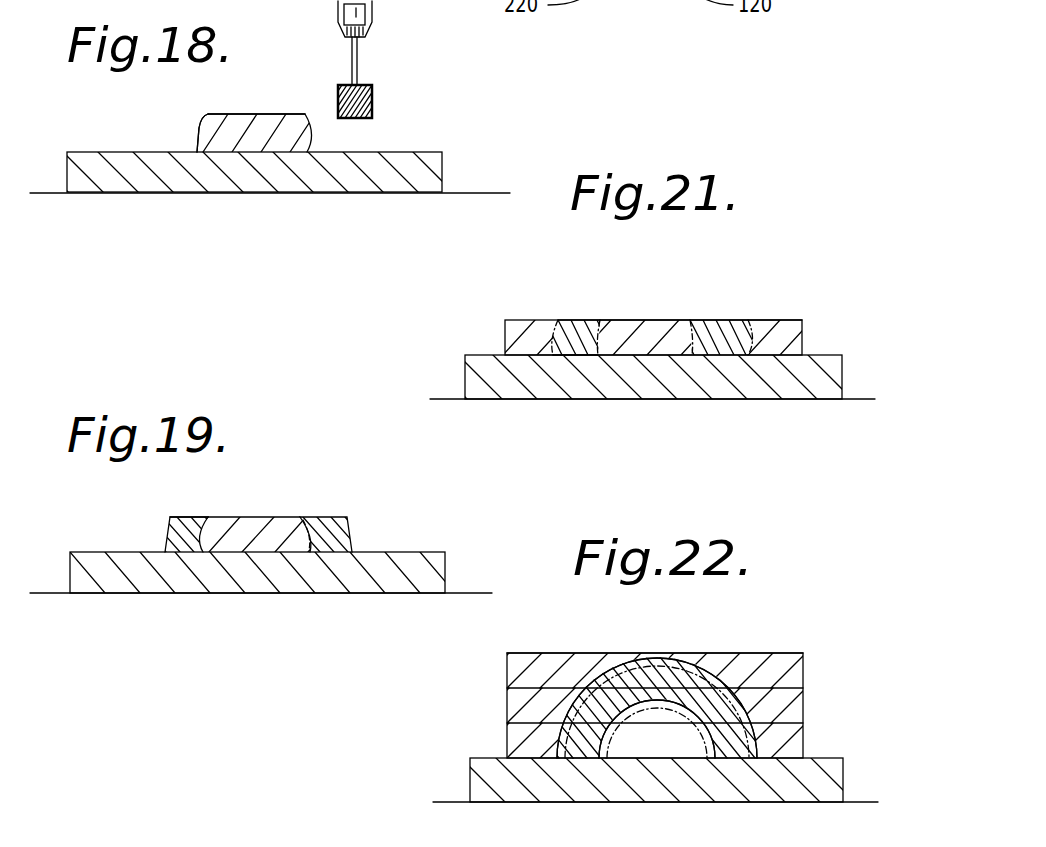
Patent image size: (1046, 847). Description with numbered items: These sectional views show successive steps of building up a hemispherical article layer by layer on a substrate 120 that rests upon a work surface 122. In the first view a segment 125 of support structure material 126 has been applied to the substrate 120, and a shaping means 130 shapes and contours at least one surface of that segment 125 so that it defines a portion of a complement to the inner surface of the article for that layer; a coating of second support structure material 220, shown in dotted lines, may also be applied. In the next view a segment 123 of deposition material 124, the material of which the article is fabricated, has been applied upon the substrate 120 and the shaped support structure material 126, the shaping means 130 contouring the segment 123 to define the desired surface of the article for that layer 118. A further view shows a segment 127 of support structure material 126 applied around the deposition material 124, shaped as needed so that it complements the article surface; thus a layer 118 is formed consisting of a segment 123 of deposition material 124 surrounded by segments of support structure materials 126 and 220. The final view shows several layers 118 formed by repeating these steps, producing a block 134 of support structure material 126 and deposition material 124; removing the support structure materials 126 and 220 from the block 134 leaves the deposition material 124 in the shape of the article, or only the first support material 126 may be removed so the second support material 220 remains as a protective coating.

In FIG. 21, the layer 118 is at (496, 330).
In FIG. 18, the substrate 120 is at (203, 172).
In FIG. 19, the substrate 120 is at (245, 573).
In FIG. 21, the substrate 120 is at (642, 377).
In FIG. 22, the substrate 120 is at (498, 777).
In FIG. 18, the work surface 122 is at (482, 192).
In FIG. 19, the work surface 122 is at (477, 593).
In FIG. 21, the work surface 122 is at (447, 397).
In FIG. 22, the work surface 122 is at (448, 798).
In FIG. 19, the segment of deposition material 123 is at (348, 533).
In FIG. 21, the segment of deposition material 123 is at (718, 328).
In FIG. 19, the deposition material 124 is at (173, 537).
In FIG. 21, the deposition material 124 is at (580, 325).
In FIG. 22, the deposition material 124 is at (641, 665).
In FIG. 18, the segment of support structure material 125 is at (298, 142).
In FIG. 19, the segment of support structure material 125 is at (267, 525).
In FIG. 21, the segment of support structure material 125 is at (675, 325).
In FIG. 18, the support structure material 126 is at (215, 125).
In FIG. 19, the support structure material 126 is at (233, 523).
In FIG. 21, the support structure material 126 is at (628, 325).
In FIG. 22, the support structure material 126 is at (772, 667).
In FIG. 21, the segment of support structure material 127 is at (525, 330).
In FIG. 18, the shaping means 130 is at (370, 15).
In FIG. 22, the block 134 is at (713, 647).
In FIG. 18, the second support structure material 220 is at (301, 114).
In FIG. 19, the second support structure material 220 is at (313, 553).
In FIG. 21, the second support structure material 220 is at (600, 357).
In FIG. 22, the second support structure material 220 is at (588, 683).